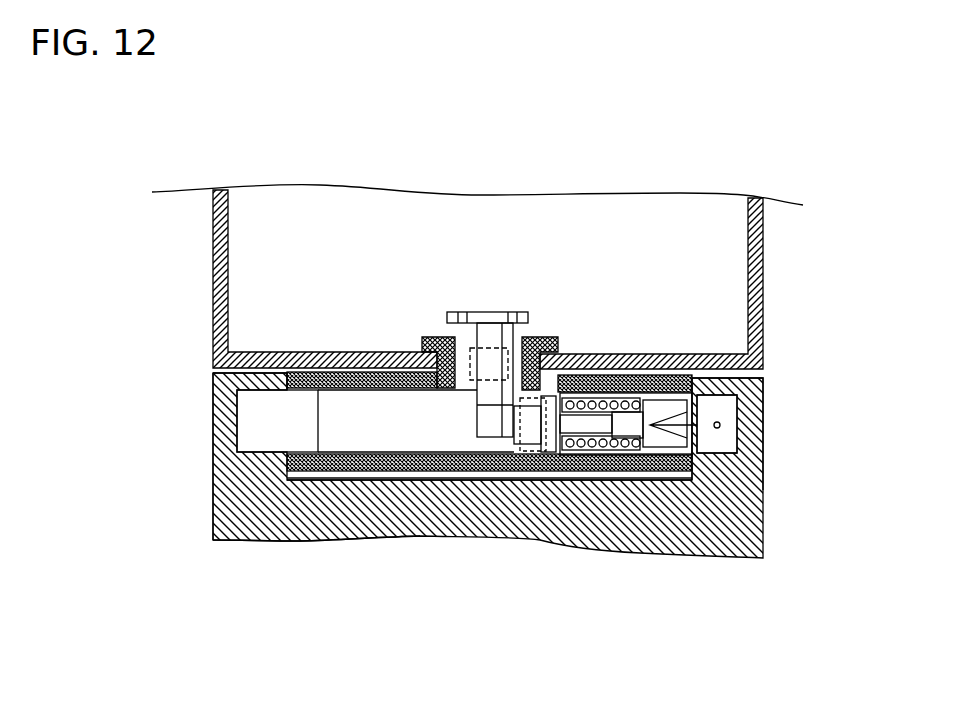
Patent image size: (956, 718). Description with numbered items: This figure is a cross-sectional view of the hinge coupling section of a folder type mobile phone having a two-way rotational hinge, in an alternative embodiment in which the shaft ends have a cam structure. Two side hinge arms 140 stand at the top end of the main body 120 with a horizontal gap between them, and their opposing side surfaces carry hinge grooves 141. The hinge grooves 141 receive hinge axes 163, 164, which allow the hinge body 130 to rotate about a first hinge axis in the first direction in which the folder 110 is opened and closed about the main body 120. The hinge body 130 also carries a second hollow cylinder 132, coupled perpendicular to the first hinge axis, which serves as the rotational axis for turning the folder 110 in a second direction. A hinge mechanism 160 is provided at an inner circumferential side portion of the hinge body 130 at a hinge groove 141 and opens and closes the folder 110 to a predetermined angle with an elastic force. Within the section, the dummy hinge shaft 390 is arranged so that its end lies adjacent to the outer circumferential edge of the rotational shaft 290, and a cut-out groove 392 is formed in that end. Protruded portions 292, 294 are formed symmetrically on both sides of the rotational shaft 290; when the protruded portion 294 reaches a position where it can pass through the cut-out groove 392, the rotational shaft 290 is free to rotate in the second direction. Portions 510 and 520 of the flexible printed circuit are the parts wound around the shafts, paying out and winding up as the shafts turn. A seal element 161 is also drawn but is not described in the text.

The folder 110 is at (222, 242).
The main body 120 is at (722, 540).
The hinge body 130 is at (300, 478).
The second hollow cylinder 132 is at (513, 312).
The side hinge arms 140 is at (215, 410).
The hinge grooves 141 is at (215, 446).
The hinge mechanism 160 is at (752, 498).
The seal 161 is at (565, 378).
The hinge axis 163 is at (252, 402).
The hinge axis 164 is at (722, 425).
The rotational shaft 290 is at (477, 420).
The protruded portion 292 is at (483, 407).
The protruded portion 294 is at (416, 421).
The dummy hinge shaft 390 is at (533, 435).
The cut-out groove 392 is at (512, 440).
The portion 510 is at (553, 350).
The portion 520 is at (455, 337).